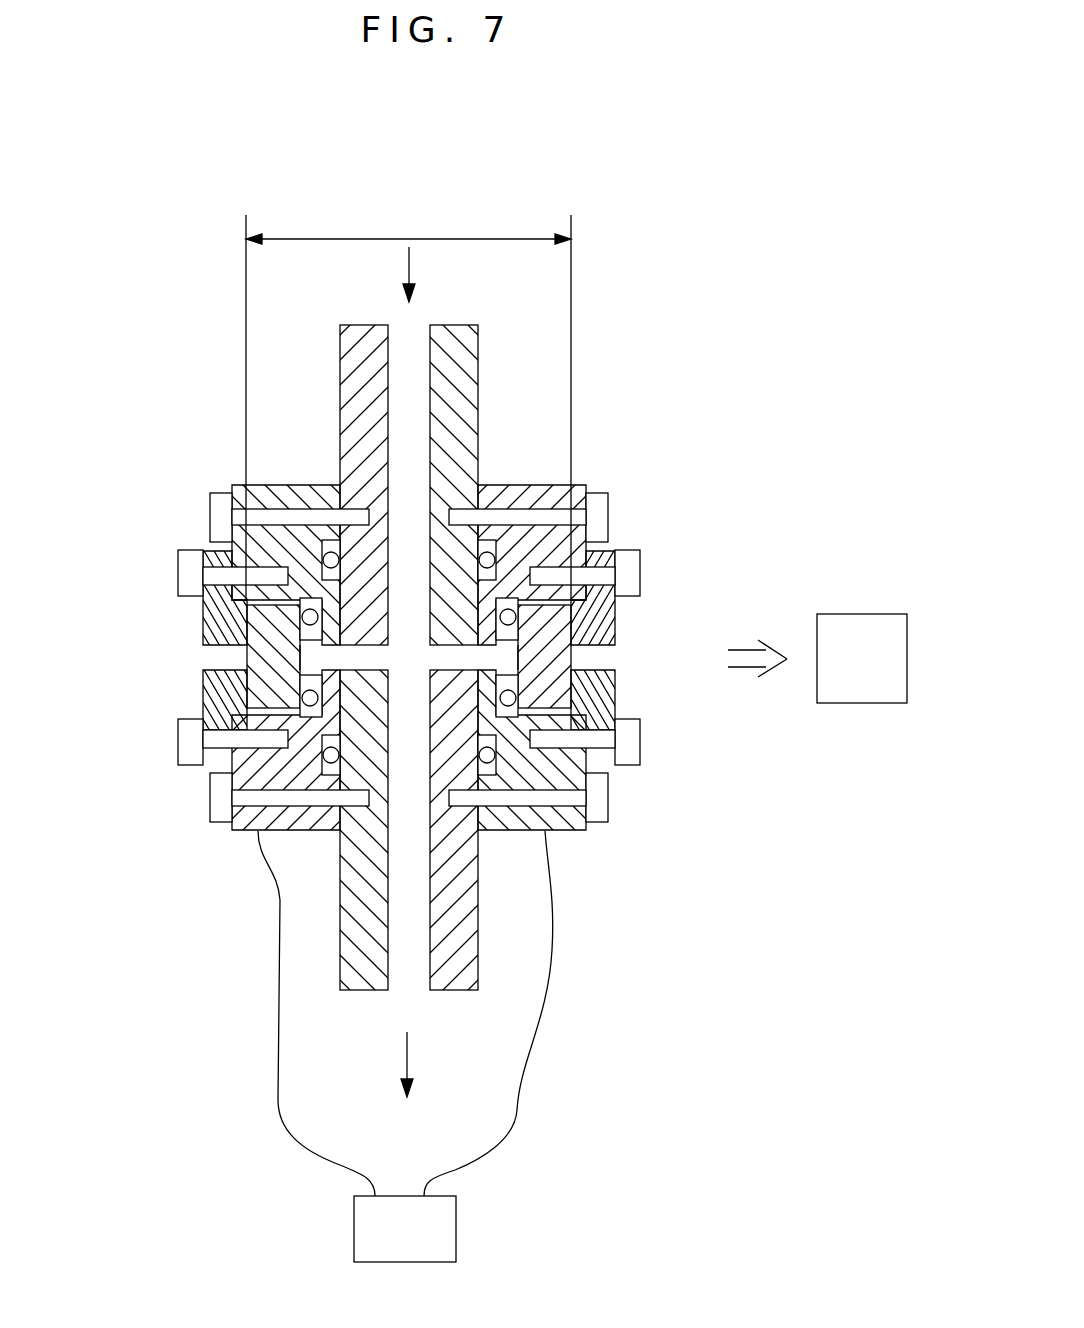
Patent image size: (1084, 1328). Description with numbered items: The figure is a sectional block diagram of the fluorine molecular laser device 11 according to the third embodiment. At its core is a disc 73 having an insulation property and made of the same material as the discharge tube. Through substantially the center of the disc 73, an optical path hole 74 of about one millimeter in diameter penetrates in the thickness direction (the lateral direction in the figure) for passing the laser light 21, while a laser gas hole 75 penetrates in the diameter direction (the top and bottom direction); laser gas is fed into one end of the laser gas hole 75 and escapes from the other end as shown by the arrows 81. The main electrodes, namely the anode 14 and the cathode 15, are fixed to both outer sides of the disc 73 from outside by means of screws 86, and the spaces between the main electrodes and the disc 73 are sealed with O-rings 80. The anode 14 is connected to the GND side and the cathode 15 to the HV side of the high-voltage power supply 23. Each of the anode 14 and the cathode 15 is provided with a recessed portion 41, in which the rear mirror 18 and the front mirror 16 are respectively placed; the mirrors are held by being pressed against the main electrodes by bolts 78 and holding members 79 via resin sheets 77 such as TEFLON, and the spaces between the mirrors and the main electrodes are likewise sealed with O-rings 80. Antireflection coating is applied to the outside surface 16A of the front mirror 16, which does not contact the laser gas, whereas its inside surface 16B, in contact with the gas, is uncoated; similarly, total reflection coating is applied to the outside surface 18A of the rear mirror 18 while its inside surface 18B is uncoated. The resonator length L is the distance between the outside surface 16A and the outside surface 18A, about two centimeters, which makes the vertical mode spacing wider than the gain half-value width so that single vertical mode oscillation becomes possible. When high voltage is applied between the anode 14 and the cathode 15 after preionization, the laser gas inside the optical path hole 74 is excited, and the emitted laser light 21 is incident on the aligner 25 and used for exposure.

The fluorine molecular laser device 11 is at (592, 228).
The anode 14 is at (302, 831).
The cathode 15 is at (508, 831).
The front mirror 16 is at (565, 831).
The outside surface of the front mirror 16A is at (500, 650).
The inside surface of the front mirror 16B is at (510, 655).
The rear mirror 18 is at (240, 650).
The outside surface of the rear mirror 18A is at (245, 665).
The inside surface of the rear mirror 18B is at (290, 578).
The laser light 21 is at (742, 668).
The high-voltage power supply 23 is at (456, 1240).
The aligner 25 is at (866, 703).
The recessed portion 41 is at (300, 600).
The disc 73 is at (478, 338).
The optical path hole 74 is at (300, 658).
The laser gas hole 75 is at (405, 370).
The resin sheet 77 is at (192, 730).
The bolt 78 is at (178, 565).
The holding member 79 is at (205, 693).
The O-ring 80 is at (312, 603).
The arrows 81 is at (411, 270).
The screw 86 is at (222, 492).